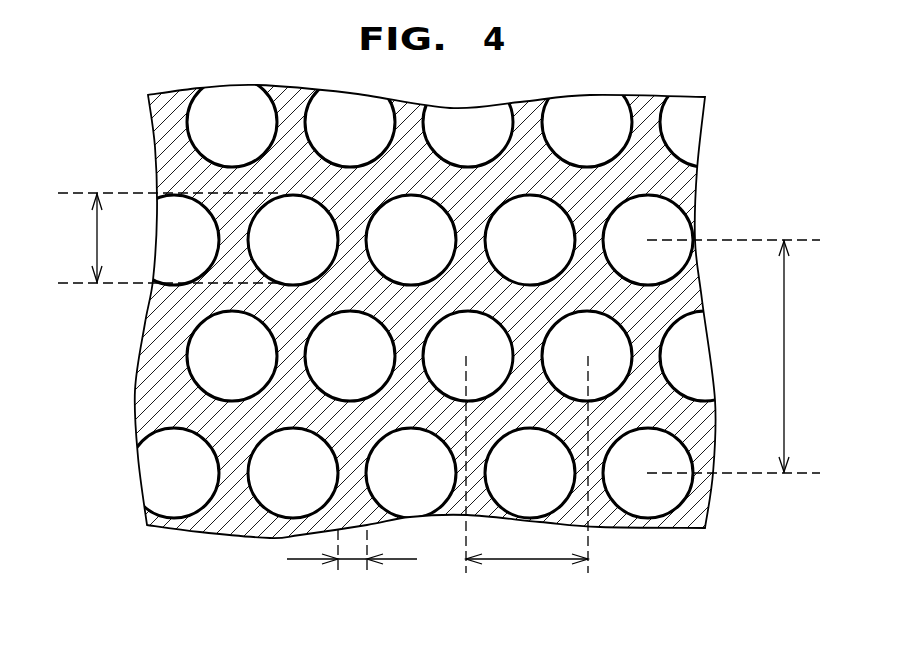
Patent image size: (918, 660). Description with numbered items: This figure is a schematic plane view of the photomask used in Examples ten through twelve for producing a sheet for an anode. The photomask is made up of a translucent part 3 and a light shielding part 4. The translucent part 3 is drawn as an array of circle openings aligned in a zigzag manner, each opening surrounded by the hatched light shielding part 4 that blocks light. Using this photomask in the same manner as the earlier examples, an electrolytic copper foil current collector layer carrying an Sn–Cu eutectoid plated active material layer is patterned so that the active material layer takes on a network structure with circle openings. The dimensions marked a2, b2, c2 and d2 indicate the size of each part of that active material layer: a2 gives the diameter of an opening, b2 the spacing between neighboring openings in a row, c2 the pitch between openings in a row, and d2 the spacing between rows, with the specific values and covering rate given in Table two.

The translucent part 3 is at (273, 478).
The light shielding part 4 is at (165, 410).
The size of part of the active material layer a2 is at (162, 238).
The size of part of the active material layer b2 is at (352, 571).
The size of part of the active material layer c2 is at (527, 477).
The size of part of the active material layer d2 is at (739, 356).